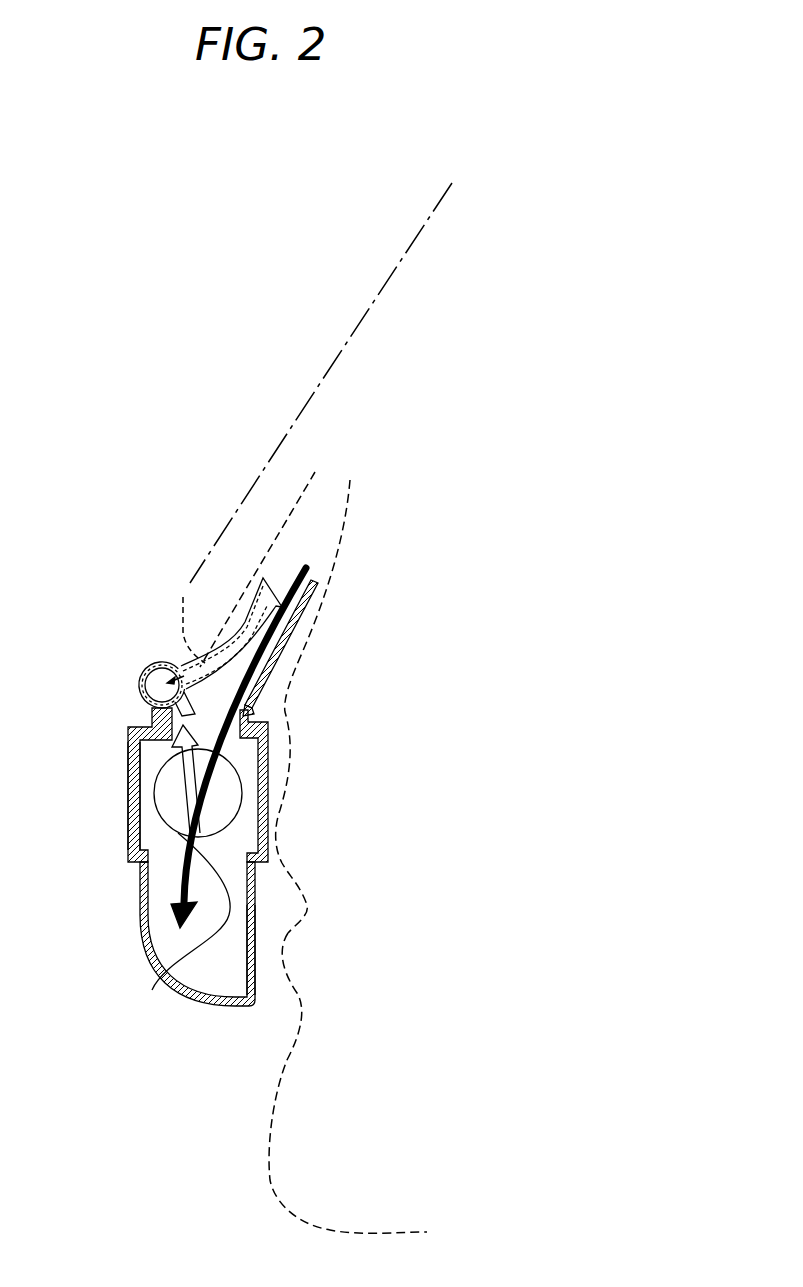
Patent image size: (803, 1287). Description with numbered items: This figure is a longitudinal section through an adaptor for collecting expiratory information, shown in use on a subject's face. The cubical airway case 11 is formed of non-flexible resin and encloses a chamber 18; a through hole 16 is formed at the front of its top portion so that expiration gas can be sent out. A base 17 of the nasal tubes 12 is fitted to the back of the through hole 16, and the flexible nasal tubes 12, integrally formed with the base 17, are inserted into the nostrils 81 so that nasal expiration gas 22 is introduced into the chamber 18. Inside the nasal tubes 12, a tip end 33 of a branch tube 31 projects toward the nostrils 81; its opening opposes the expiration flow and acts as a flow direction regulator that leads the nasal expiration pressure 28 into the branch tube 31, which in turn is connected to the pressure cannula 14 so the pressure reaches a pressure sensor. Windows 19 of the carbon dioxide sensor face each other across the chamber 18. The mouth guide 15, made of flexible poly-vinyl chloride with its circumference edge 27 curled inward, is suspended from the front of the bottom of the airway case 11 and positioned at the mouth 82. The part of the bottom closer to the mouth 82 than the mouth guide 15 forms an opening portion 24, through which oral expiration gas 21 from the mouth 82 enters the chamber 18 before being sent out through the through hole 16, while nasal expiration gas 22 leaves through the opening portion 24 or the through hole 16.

The airway case 11 is at (227, 875).
The nasal tubes 12 is at (283, 650).
The pressure cannula 14 is at (140, 680).
The mouth guide 15 is at (158, 950).
The through hole 16 is at (178, 748).
The base 17 is at (280, 703).
The chamber 18 is at (152, 835).
The windows 19 is at (230, 797).
The oral expiration gas 21 is at (152, 990).
The nasal expiration gas 22 is at (308, 572).
The opening portion 24 is at (250, 880).
The circumference edge 27 is at (250, 923).
The nasal expiration pressure 28 is at (160, 652).
The branch tubes 31 is at (213, 660).
The tip end 33 is at (240, 617).
The nostrils 81 is at (323, 515).
The mouth 82 is at (290, 932).